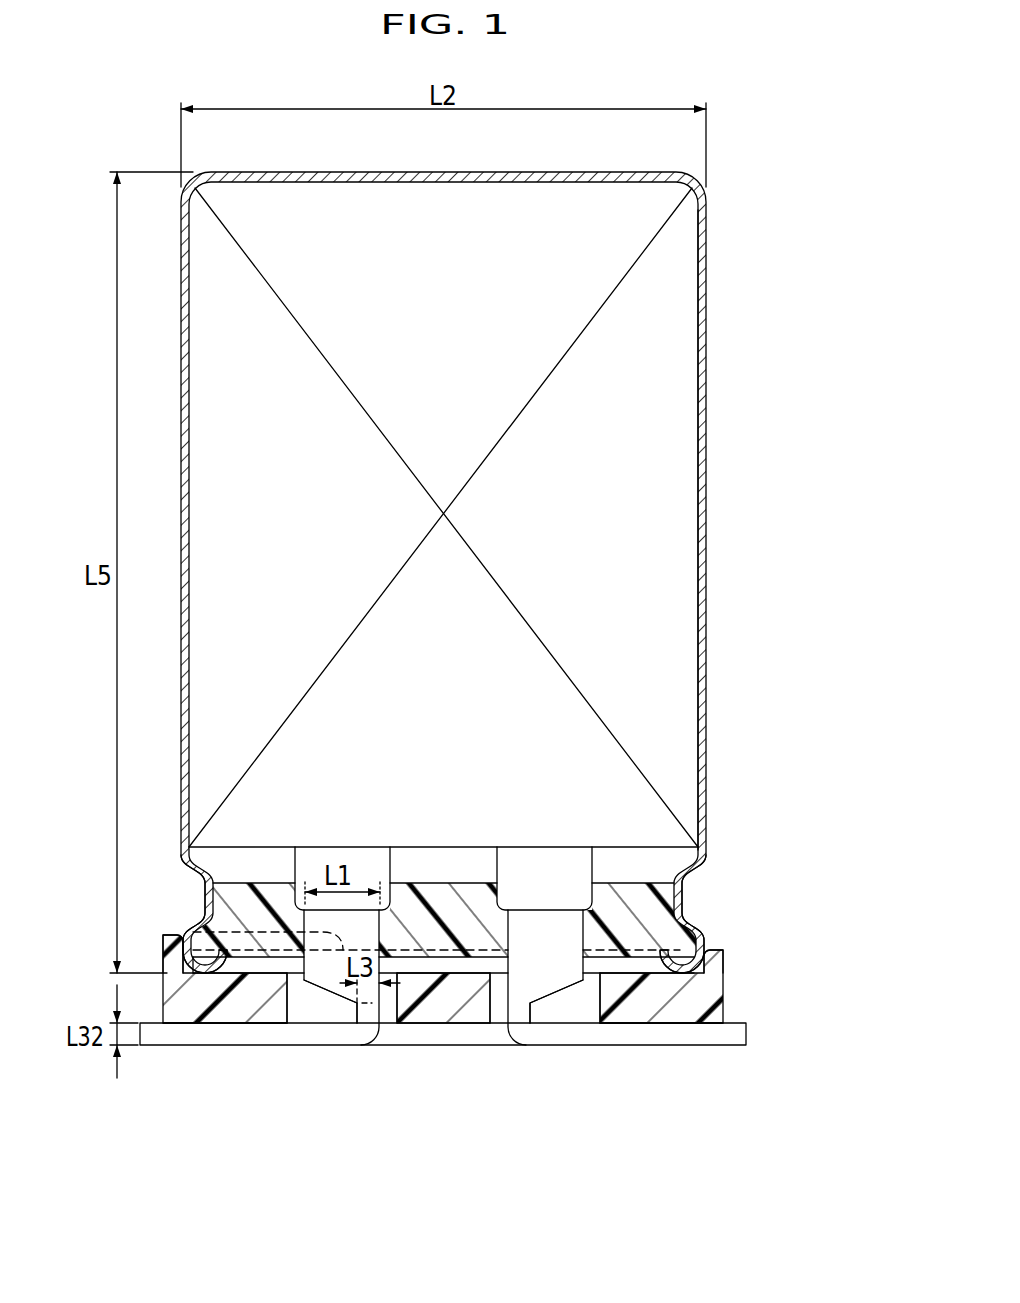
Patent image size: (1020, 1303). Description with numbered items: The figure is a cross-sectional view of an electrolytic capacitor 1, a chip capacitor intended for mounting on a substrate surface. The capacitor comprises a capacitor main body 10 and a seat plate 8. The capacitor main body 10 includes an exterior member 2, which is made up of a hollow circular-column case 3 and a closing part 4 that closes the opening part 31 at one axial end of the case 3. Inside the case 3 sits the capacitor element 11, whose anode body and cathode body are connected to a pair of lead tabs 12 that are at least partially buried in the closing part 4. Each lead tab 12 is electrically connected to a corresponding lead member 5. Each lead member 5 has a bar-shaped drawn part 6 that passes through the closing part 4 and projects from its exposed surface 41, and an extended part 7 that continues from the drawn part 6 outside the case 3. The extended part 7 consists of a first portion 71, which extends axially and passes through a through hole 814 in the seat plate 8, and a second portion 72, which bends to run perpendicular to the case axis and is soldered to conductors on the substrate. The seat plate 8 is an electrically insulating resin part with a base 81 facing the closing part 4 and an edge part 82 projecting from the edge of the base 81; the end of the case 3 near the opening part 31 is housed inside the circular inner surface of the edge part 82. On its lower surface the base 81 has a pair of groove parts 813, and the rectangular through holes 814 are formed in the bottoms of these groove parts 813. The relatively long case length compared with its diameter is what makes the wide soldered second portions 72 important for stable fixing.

The electrolytic capacitor 1 is at (745, 205).
The capacitor main body 10 is at (707, 370).
The capacitor element 11 is at (686, 491).
The lead tab 12 is at (317, 863).
The exterior member 2 is at (775, 812).
The case 3 is at (705, 772).
The closing part 4 is at (667, 907).
The surface 41 is at (452, 958).
The opening part 31 is at (656, 961).
The lead member 5 is at (268, 1052).
The drawn part 6 is at (426, 1002).
The extended part 7 is at (443, 1021).
The first portion 71 is at (363, 1015).
The second portion 72 is at (370, 1092).
The seat plate 8 is at (775, 918).
The base 81 is at (712, 1002).
The edge part 82 is at (708, 946).
The groove part 813 is at (203, 1018).
The through hole 814 is at (289, 996).